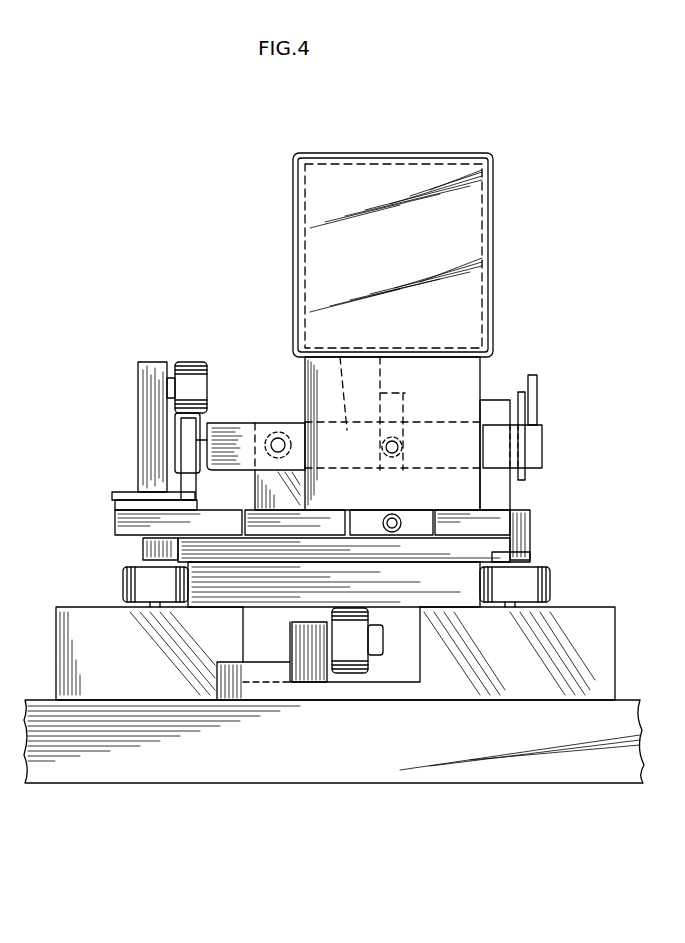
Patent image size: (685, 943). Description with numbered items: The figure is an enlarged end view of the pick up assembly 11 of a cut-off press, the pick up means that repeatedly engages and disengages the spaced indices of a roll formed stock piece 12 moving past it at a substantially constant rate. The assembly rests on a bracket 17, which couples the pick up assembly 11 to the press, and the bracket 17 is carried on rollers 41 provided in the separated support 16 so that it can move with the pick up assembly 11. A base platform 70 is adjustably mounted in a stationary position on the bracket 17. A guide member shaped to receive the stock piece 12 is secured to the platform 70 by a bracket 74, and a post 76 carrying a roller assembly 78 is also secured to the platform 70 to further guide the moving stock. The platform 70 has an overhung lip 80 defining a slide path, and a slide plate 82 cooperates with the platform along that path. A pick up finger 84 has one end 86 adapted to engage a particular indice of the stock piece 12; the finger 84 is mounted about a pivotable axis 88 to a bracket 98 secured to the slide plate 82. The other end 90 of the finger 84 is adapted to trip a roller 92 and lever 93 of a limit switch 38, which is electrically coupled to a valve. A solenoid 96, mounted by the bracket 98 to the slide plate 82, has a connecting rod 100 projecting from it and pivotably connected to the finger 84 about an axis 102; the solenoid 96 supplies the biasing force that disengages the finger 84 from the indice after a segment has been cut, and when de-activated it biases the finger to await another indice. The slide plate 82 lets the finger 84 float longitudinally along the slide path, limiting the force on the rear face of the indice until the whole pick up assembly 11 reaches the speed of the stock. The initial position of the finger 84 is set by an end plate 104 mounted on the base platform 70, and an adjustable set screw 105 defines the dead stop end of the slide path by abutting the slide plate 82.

The pick up assembly 11 is at (584, 290).
The stock piece 12 is at (204, 435).
The support 16 is at (628, 665).
The bracket 17 is at (465, 588).
The limit switch 38 is at (500, 478).
The rollers 41 is at (128, 592).
The base platform 70 is at (480, 548).
The bracket 74 is at (112, 496).
The post 76 is at (140, 398).
The roller assembly 78 is at (185, 366).
The overhung lip 80 is at (150, 548).
The slide plate 82 is at (505, 528).
The pick up finger 84 is at (340, 357).
The one end of finger 86 is at (210, 447).
The pivotable axis 88 is at (278, 438).
The other end of finger 90 is at (545, 448).
The roller 92 is at (537, 380).
The lever 93 is at (521, 390).
The solenoid 96 is at (312, 238).
The bracket 98 is at (483, 382).
The connecting rod 100 is at (405, 408).
The axis 102 is at (386, 453).
The end plate 104 is at (362, 525).
The adjustable set screw 105 is at (398, 533).